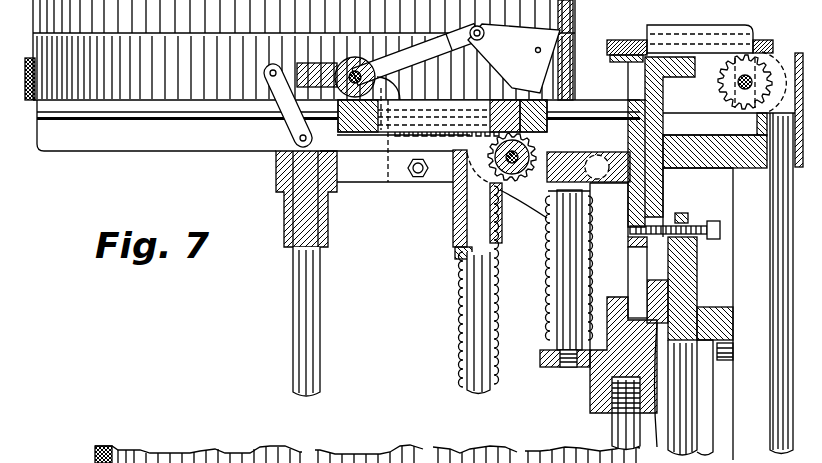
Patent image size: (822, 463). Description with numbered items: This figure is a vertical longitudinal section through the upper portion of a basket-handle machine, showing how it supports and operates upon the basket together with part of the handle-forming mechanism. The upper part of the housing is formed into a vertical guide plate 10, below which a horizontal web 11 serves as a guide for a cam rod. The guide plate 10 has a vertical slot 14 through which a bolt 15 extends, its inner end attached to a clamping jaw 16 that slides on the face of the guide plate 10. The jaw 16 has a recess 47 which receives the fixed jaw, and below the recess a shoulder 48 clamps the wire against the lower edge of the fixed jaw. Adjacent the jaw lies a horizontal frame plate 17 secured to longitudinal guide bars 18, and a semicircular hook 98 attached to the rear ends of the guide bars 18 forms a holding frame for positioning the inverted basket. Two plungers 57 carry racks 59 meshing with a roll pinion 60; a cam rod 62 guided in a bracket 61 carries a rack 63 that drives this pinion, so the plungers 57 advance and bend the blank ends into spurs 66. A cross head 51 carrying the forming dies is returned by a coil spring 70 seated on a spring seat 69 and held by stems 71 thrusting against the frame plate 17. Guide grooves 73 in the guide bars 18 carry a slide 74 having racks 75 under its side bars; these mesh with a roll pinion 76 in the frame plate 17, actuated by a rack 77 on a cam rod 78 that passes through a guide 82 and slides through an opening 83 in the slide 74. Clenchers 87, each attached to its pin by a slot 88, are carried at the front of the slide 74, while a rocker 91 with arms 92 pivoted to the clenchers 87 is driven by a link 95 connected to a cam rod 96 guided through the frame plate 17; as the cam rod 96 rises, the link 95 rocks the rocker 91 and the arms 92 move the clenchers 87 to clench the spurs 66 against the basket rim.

The guide plate 10 is at (668, 198).
The horizontal web 11 is at (700, 308).
The vertical slot 14 is at (653, 263).
The bolt 15 is at (721, 226).
The clamping jaw 16 is at (628, 200).
The frame plate 17 is at (564, 158).
The guide bars 18 is at (588, 105).
The recess 47 is at (665, 127).
The shoulder 48 is at (663, 182).
The cross head 51 is at (602, 383).
The plungers 57 is at (623, 45).
The racks 59 is at (704, 52).
The roll pinion 60 is at (718, 85).
The bracket 61 is at (717, 163).
The cam rod 62 is at (770, 335).
The rack 63 is at (770, 33).
The spurs 66 is at (618, 62).
The spring seat 69 is at (548, 367).
The coil spring 70 is at (546, 293).
The stems 71 is at (548, 259).
The guide grooves 73 is at (238, 121).
The slide 74 is at (382, 134).
The racks 75 is at (440, 136).
The roll pinion 76 is at (539, 157).
The rack 77 is at (456, 252).
The cam rod 78 is at (470, 352).
The guide 82 is at (455, 223).
The opening 83 is at (441, 110).
The clenchers 87 is at (484, 35).
The slot 88 is at (534, 47).
The rocker 91 is at (352, 57).
The arms 92 is at (397, 60).
The link 95 is at (264, 75).
The cam rod 96 is at (308, 332).
The semicircular hook 98 is at (30, 101).